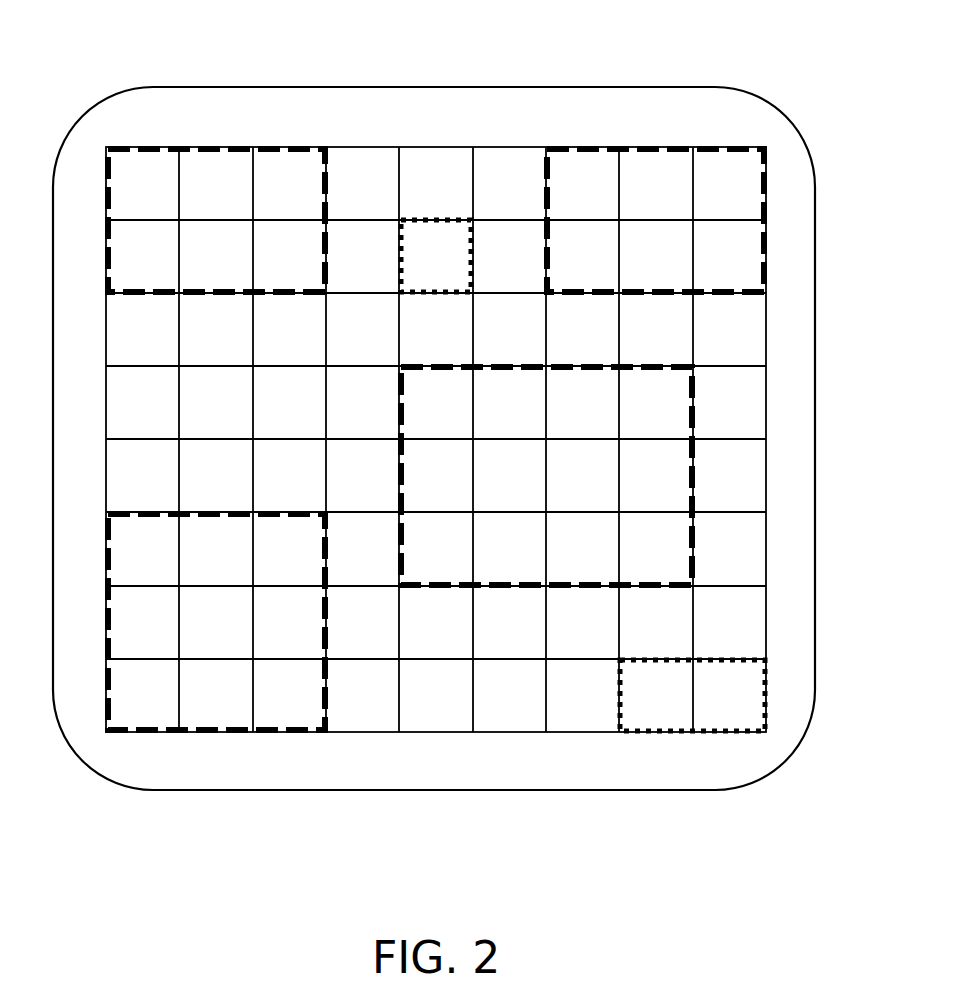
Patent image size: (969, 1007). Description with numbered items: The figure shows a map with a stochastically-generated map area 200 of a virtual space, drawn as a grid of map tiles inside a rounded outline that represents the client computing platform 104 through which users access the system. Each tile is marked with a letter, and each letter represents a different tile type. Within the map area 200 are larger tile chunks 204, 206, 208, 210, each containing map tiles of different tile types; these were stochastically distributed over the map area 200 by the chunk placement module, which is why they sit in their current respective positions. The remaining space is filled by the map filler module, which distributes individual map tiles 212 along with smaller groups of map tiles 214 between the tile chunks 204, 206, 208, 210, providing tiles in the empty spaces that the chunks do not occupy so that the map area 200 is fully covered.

The client computing platform 104 is at (435, 88).
The map area 200 is at (569, 738).
The tile chunk 204 is at (215, 143).
The tile chunk 206 is at (655, 145).
The tile chunk 208 is at (218, 733).
The tile chunk 210 is at (527, 590).
The individual map tile 212 is at (459, 218).
The smaller group of map tiles 214 is at (720, 735).